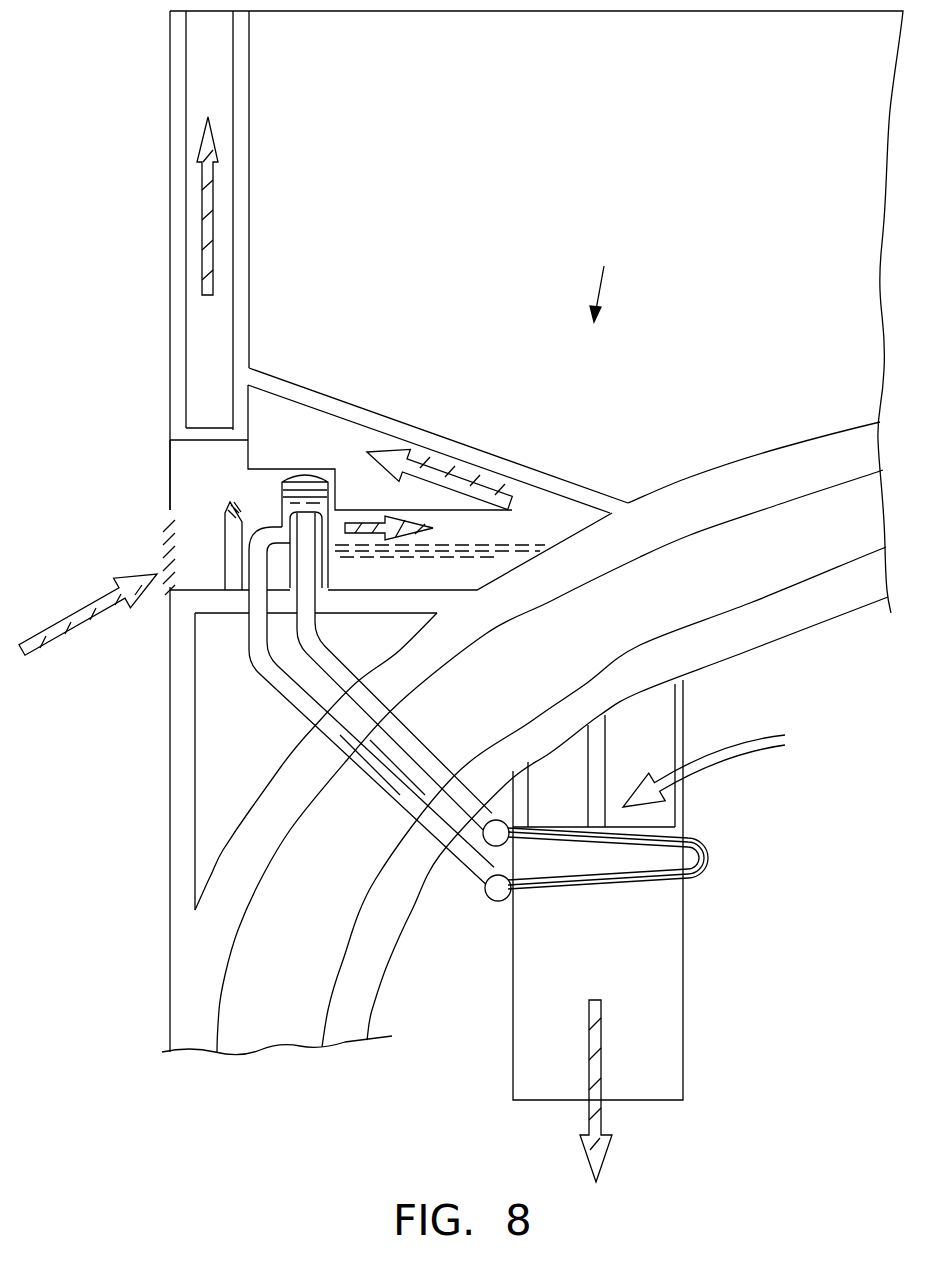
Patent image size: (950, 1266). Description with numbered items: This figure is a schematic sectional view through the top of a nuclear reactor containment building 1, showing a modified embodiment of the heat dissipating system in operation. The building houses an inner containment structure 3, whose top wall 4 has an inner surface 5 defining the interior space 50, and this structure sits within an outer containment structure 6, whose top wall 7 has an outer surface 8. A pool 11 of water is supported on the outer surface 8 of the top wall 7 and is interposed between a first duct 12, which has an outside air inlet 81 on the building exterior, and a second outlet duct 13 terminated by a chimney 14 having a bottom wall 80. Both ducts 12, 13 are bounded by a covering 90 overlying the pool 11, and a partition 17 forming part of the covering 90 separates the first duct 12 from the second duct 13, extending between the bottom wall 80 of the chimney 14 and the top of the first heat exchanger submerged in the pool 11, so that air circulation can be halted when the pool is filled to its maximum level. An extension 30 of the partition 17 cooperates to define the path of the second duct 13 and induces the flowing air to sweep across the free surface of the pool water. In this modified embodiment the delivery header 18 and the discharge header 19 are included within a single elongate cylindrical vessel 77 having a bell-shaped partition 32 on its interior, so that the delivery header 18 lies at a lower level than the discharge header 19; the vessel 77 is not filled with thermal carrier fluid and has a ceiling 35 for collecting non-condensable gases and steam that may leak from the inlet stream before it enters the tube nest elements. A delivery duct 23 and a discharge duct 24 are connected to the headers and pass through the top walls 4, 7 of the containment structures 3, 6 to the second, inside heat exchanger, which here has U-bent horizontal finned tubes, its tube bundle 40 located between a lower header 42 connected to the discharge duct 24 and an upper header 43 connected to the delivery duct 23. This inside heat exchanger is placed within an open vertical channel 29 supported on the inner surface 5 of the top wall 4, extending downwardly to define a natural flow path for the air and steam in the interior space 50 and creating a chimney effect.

The nuclear reactor containment building 1 is at (605, 280).
The inner containment structure 3 is at (337, 1010).
The top wall 4 is at (737, 627).
The inner surface 5 is at (805, 617).
The outer containment structure 6 is at (190, 1023).
The top wall 7 is at (717, 497).
The outer surface 8 is at (777, 448).
The pool 11 is at (485, 568).
The first duct 12 is at (197, 503).
The second outlet duct 13 is at (540, 512).
The chimney 14 is at (213, 74).
The partition 17 is at (273, 466).
The delivery header 18 is at (323, 590).
The discharge header 19 is at (322, 497).
The delivery duct 23 is at (273, 678).
The discharge duct 24 is at (407, 743).
The open vertical channel 29 is at (535, 1048).
The extension of the partition 30 is at (427, 507).
The bell-shaped partition 32 is at (282, 505).
The ceiling 35 is at (296, 484).
The tube bundle 40 is at (710, 843).
The lower header 42 is at (497, 820).
The upper header 43 is at (492, 900).
The interior space 50 is at (768, 971).
The cylindrical vessel 77 is at (297, 506).
The bottom wall 80 is at (202, 427).
The outside air inlet 81 is at (163, 575).
The covering 90 is at (317, 402).